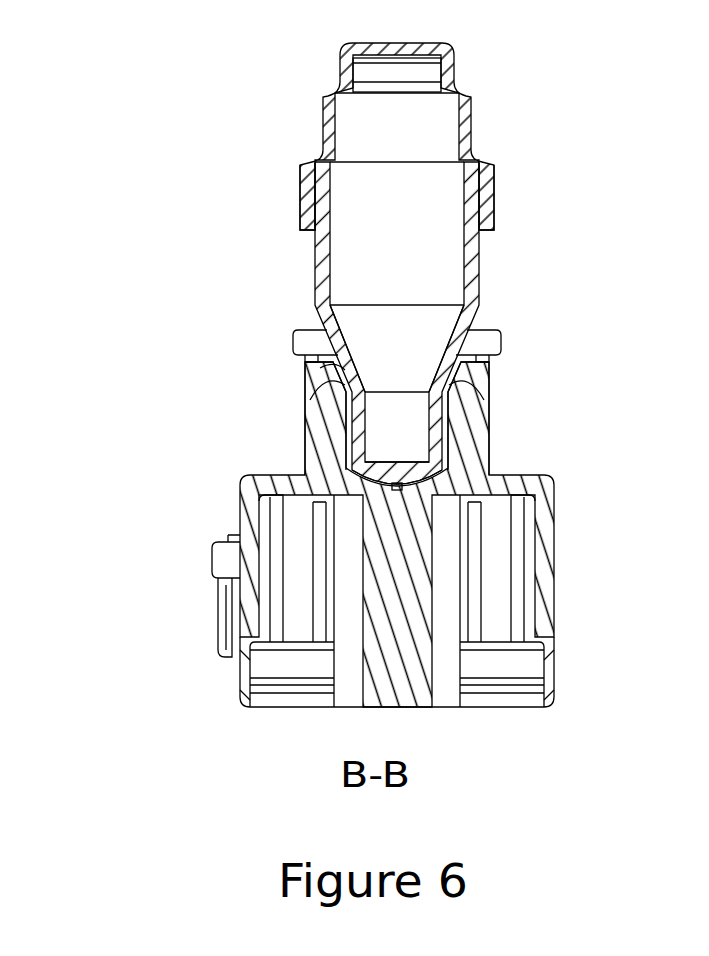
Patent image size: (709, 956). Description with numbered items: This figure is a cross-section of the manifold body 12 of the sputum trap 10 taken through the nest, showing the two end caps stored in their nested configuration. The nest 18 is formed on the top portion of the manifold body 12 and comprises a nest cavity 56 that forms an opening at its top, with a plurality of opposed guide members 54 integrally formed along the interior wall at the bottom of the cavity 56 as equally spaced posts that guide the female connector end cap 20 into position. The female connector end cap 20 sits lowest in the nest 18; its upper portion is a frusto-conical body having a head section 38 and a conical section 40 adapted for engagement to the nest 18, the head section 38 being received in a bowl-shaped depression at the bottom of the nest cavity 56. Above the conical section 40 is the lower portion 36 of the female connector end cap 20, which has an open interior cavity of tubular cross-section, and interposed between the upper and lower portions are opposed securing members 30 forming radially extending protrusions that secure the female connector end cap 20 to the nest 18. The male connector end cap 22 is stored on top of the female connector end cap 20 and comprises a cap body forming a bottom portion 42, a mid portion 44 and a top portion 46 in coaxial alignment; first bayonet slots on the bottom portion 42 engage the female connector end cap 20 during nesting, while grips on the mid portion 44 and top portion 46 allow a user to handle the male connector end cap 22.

The sputum trap 10 is at (590, 85).
The manifold body 12 is at (555, 548).
The nest 18 is at (493, 405).
The female connector end cap 20 is at (488, 280).
The male connector end cap 22 is at (480, 126).
The securing members 30 is at (293, 348).
The lower portion 36 is at (315, 258).
The head section 38 is at (445, 445).
The conical section 40 is at (455, 345).
The bottom portion 42 is at (300, 198).
The mid portion 44 is at (323, 120).
The top portion 46 is at (352, 62).
The guide members 54 is at (335, 393).
The nest cavity 56 is at (320, 368).